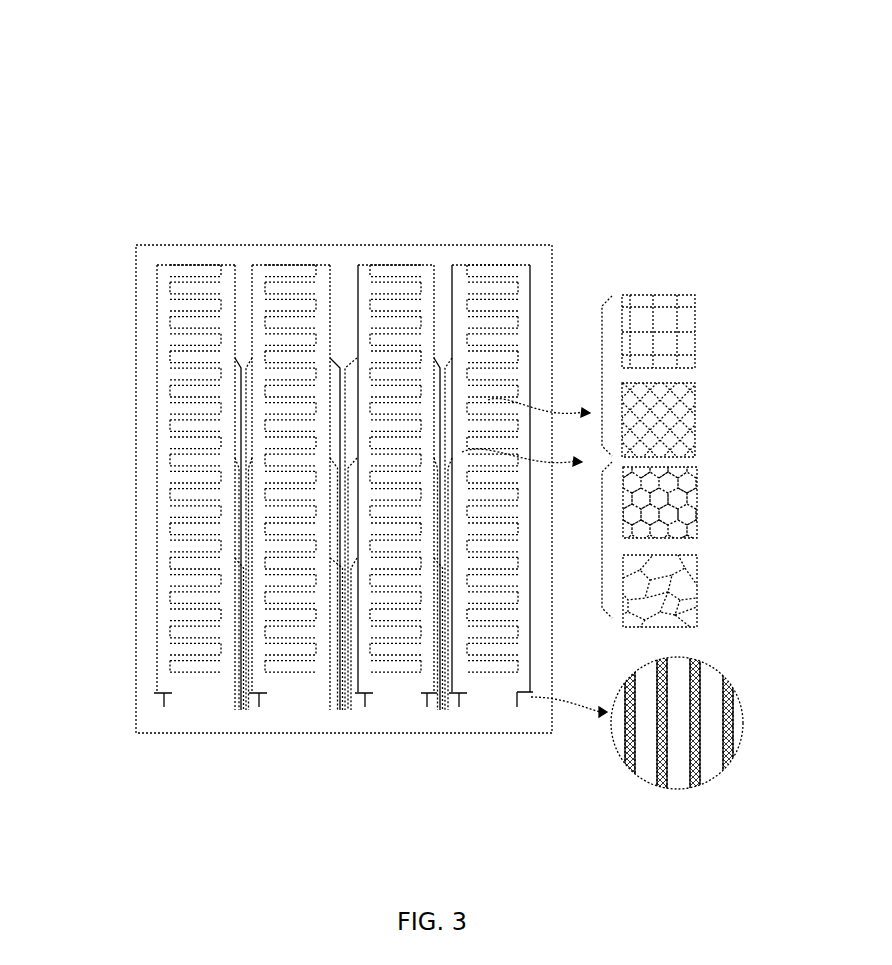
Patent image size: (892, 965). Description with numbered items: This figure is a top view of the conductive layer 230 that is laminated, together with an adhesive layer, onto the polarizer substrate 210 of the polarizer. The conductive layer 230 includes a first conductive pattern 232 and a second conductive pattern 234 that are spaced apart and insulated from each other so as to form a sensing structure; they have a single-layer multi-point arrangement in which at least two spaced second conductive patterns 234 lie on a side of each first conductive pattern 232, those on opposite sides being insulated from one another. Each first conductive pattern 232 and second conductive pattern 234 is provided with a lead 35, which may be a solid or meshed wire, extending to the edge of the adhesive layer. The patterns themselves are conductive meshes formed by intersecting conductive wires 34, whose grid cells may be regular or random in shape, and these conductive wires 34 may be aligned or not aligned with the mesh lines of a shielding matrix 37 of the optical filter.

The polarizer substrate 210 is at (136, 362).
The conductive layer 230 is at (358, 57).
The first conductive pattern 232 is at (160, 268).
The second conductive pattern 234 is at (222, 276).
The conductive wires 34 is at (780, 681).
The lead 35 is at (347, 697).
The shielding matrix 37 is at (427, 612).